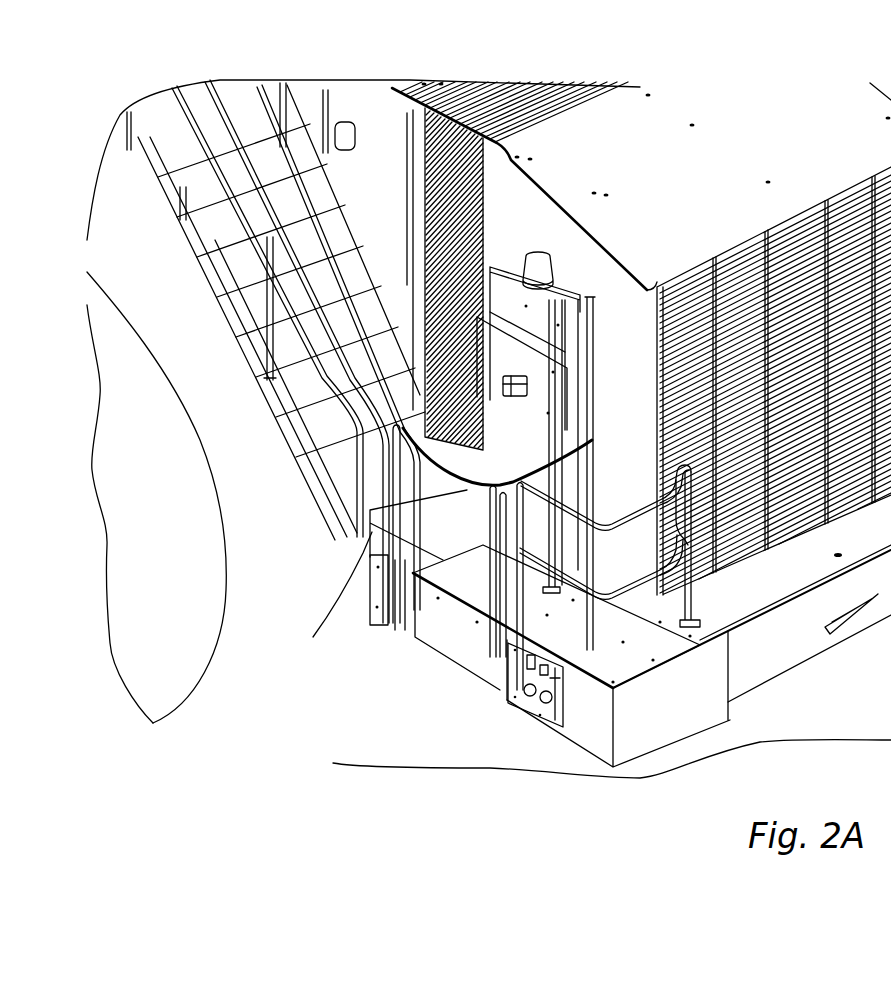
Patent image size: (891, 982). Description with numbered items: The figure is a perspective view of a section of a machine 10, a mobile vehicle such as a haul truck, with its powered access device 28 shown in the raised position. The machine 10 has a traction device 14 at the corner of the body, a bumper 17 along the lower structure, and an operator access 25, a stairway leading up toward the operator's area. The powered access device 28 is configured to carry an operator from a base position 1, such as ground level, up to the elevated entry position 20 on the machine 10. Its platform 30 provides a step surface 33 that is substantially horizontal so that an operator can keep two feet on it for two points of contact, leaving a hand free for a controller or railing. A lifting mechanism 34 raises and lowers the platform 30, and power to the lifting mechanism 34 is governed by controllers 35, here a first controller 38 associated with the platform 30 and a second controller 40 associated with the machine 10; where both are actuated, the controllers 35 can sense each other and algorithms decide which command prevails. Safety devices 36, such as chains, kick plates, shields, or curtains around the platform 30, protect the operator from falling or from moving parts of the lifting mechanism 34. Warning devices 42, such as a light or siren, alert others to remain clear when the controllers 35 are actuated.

The base position 1 is at (432, 748).
The machine 10 is at (763, 83).
The traction device 14 is at (158, 660).
The bumper 17 is at (760, 662).
The elevated entry position 20 is at (460, 617).
The operator access 25 is at (307, 390).
The powered access device 28 is at (493, 680).
The platform 30 is at (453, 632).
The step surface 33 is at (483, 596).
The lifting mechanism 34 is at (570, 297).
The controllers 35 is at (570, 700).
The safety devices 36 is at (438, 345).
The first controller 38 is at (537, 390).
The second controller 40 is at (557, 700).
The warning devices 42 is at (533, 253).